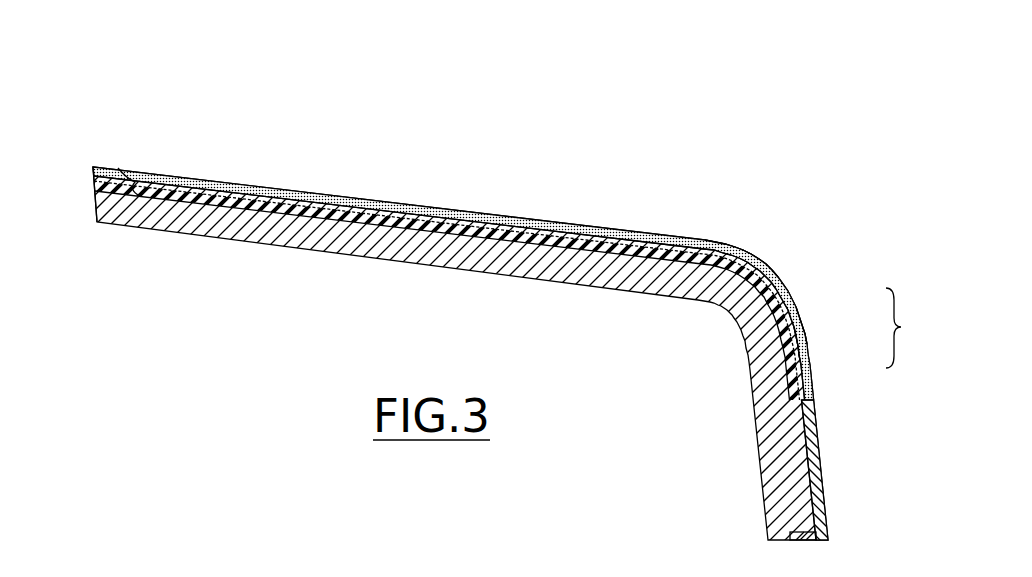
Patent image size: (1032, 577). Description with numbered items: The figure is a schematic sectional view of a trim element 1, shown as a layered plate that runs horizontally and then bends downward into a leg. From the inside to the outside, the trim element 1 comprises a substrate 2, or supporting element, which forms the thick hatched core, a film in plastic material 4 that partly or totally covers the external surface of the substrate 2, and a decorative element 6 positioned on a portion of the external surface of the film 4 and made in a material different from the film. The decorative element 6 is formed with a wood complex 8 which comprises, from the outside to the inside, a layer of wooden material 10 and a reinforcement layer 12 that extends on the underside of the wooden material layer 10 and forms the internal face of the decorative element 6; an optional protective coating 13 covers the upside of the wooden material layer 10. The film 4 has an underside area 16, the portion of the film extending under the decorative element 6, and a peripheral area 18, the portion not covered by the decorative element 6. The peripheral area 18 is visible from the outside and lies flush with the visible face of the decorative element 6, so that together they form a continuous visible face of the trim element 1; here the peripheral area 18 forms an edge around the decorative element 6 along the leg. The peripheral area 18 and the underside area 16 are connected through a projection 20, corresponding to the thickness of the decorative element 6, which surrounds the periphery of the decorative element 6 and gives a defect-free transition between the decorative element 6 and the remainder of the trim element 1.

The trim element 1 is at (310, 130).
The substrate 2 is at (262, 247).
The film in plastic material 4 is at (118, 167).
The decorative element 6 is at (480, 212).
The wood complex 8 is at (902, 328).
The layer of wooden material 10 is at (800, 327).
The reinforcement layer 12 is at (807, 352).
The protective coating 13 is at (737, 247).
The underside area 16 is at (653, 234).
The peripheral area 18 is at (828, 470).
The projection 20 is at (95, 200).